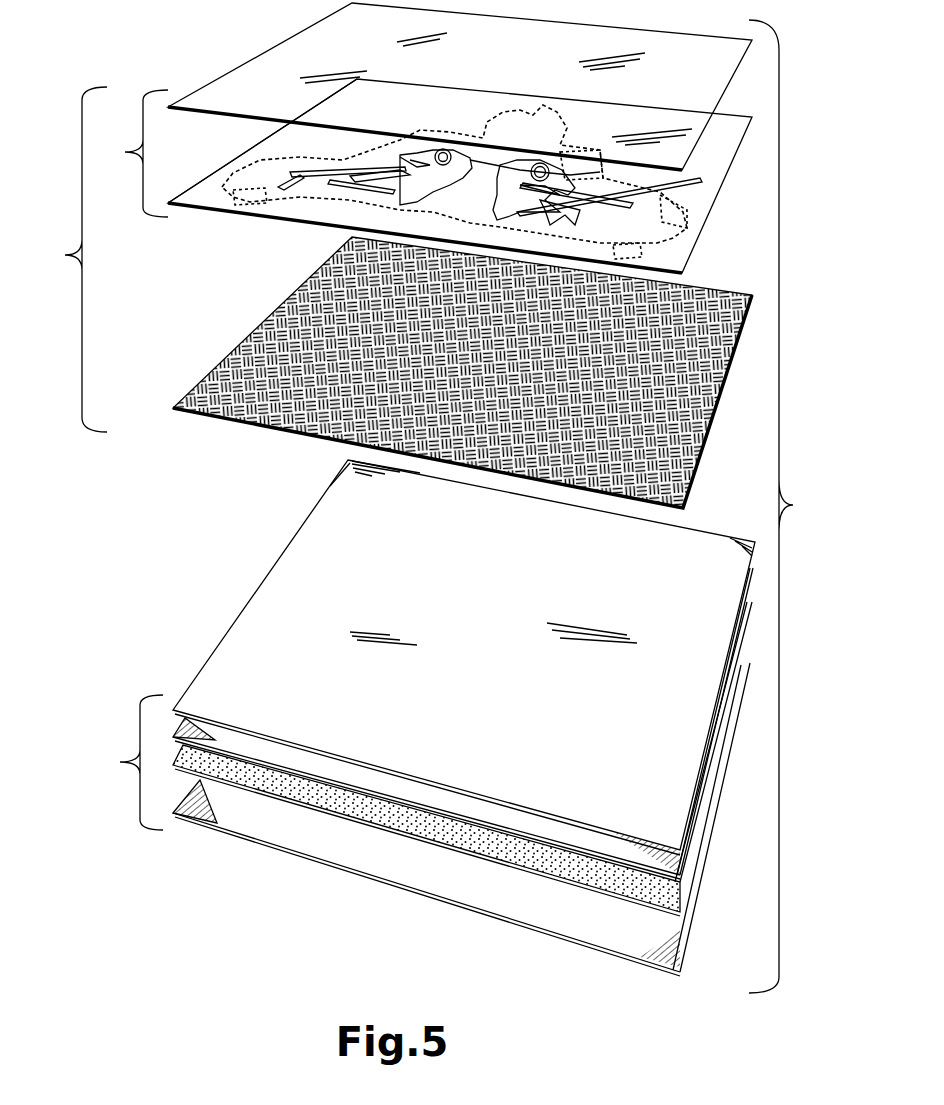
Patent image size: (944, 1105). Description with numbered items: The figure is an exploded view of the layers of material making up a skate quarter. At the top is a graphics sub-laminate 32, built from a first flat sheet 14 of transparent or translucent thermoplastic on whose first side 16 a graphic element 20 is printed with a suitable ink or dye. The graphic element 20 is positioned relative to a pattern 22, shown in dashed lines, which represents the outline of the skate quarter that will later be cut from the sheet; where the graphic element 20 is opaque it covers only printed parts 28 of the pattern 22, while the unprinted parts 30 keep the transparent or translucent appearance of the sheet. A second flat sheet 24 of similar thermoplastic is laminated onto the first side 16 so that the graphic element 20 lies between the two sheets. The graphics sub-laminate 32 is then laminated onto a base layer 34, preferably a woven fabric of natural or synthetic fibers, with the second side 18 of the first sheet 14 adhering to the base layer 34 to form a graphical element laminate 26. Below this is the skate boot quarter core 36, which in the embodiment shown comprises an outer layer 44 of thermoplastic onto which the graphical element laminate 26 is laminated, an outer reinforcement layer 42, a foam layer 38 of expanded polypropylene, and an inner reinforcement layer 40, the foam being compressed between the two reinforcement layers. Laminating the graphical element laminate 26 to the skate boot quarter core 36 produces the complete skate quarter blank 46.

The first flat sheet 14 is at (222, 213).
The first side 16 is at (699, 213).
The second side 18 is at (705, 221).
The graphic element 20 is at (355, 168).
The pattern 22 is at (245, 160).
The second flat sheet 24 is at (225, 82).
The graphical element laminate 26 is at (62, 259).
The printed parts 28 is at (308, 190).
The unprinted parts 30 is at (278, 180).
The graphics sub-laminate 32 is at (128, 153).
The base layer 34 is at (225, 375).
The skate boot quarter core 36 is at (124, 762).
The foam layer 38 is at (680, 903).
The inner reinforcement layer 40 is at (223, 833).
The outer reinforcement layer 42 is at (672, 860).
The outer layer 44 is at (225, 688).
The skate quarter blank 46 is at (792, 506).